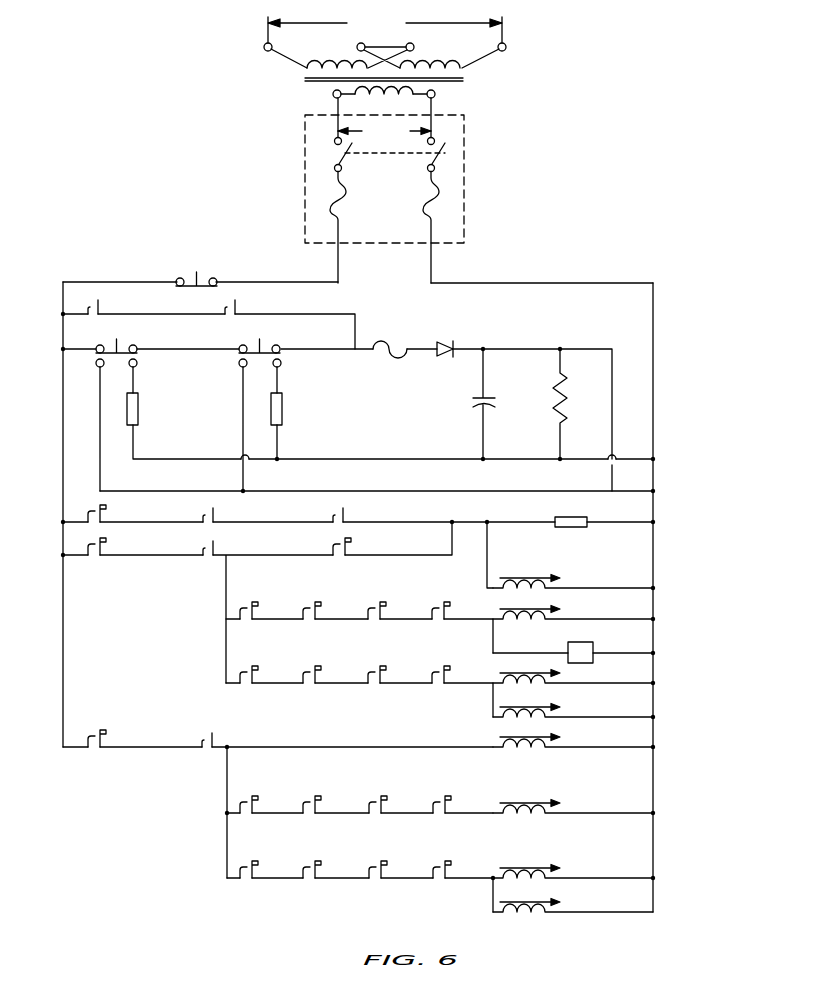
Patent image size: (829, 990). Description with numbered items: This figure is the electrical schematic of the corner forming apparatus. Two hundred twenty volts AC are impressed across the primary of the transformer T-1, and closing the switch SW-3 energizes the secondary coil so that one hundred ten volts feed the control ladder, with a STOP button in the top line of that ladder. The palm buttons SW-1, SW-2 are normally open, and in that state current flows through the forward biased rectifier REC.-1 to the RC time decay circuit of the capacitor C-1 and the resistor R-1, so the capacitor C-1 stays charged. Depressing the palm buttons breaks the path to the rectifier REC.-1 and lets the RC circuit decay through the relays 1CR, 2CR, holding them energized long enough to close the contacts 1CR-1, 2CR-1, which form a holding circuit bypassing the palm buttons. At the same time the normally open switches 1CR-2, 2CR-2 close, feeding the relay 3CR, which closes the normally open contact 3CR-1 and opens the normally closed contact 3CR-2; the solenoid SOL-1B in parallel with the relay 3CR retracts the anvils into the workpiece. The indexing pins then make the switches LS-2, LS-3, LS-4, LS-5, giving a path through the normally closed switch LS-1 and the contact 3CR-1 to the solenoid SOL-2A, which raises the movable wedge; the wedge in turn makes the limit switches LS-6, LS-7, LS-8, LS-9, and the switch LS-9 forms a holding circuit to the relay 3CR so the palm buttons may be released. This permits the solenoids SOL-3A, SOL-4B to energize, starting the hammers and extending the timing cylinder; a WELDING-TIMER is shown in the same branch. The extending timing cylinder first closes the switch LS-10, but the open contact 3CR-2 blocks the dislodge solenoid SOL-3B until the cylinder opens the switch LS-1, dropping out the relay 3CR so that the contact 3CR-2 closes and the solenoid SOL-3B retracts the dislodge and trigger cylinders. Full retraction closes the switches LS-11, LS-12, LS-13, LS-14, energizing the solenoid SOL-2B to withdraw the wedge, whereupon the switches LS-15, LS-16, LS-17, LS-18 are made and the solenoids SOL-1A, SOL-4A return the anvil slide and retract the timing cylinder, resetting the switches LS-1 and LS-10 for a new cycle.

The transformer T-1 is at (391, 56).
The switch SW-3 is at (445, 153).
The stop pushbutton STOP is at (194, 270).
The contact 1CR-1 is at (121, 304).
The contact 2CR-1 is at (262, 304).
The palm button SW-1 is at (132, 344).
The palm button SW-2 is at (279, 344).
The relay 1CR is at (151, 409).
The relay 2CR is at (299, 409).
The rectifier REC.-1 is at (469, 338).
The capacitor C-1 is at (499, 404).
The resistor R-1 is at (576, 404).
The normally closed switch LS-1 is at (120, 529).
The normally open switch 1CR-2 is at (239, 513).
The normally open switch 2CR-2 is at (372, 513).
The normally open contact 3CR-1 is at (239, 546).
The relay 3CR is at (572, 513).
The limit switch LS-9 is at (405, 610).
The solenoid SOL-1B is at (573, 573).
The solenoid SOL-2A is at (573, 609).
The switch LS-2 is at (261, 599).
The switch LS-3 is at (325, 599).
The switch LS-4 is at (390, 599).
The switch LS-5 is at (455, 599).
The limit switch LS-6 is at (261, 664).
The limit switch LS-7 is at (325, 664).
The limit switch LS-8 is at (391, 664).
The welding timer WELDING-TIMER is at (585, 650).
The solenoid SOL-3A is at (573, 675).
The solenoid SOL-4B is at (573, 708).
The dislodge solenoid SOL-3B is at (573, 740).
The switch LS-10 is at (106, 723).
The normally closed contact 3CR-2 is at (236, 729).
The switch LS-11 is at (261, 793).
The switch LS-12 is at (326, 793).
The switch LS-13 is at (390, 794).
The switch LS-14 is at (457, 794).
The switch LS-15 is at (265, 859).
The switch LS-16 is at (326, 859).
The switch LS-17 is at (390, 859).
The switch LS-18 is at (455, 859).
The solenoid SOL-2B is at (573, 805).
The solenoid SOL-1A is at (573, 870).
The solenoid SOL-4A is at (573, 903).